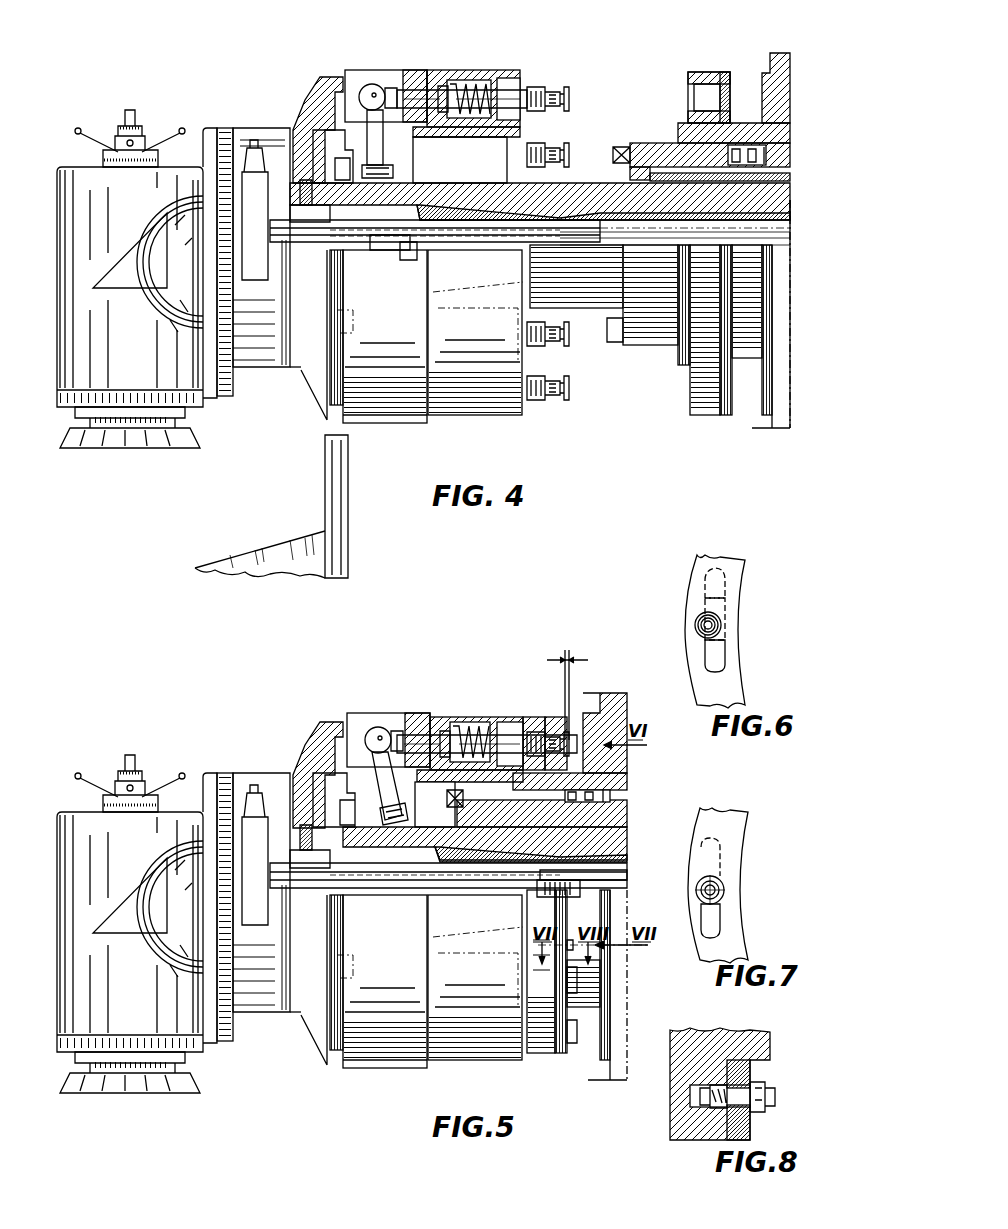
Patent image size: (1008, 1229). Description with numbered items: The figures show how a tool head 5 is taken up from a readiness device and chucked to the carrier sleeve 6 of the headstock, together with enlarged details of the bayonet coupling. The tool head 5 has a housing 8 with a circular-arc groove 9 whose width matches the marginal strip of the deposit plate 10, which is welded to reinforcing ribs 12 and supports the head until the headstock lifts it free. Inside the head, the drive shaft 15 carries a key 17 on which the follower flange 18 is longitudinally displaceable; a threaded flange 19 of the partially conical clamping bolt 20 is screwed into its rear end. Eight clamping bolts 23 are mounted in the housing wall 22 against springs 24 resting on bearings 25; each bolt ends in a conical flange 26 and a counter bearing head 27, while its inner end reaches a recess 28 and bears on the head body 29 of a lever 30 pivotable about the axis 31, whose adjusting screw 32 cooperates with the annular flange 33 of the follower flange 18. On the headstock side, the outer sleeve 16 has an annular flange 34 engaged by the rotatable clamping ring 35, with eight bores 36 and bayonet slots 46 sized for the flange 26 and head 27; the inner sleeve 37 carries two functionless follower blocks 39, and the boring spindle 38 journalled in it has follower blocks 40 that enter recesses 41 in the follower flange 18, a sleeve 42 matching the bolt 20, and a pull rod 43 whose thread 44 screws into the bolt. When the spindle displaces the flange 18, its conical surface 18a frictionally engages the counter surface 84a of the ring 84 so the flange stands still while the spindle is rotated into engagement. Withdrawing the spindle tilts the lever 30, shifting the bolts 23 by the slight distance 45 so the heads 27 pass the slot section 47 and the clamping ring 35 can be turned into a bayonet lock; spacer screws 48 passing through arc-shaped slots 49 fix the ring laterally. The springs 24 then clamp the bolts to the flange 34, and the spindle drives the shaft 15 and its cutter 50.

In FIG. 4, the tool head 5 is at (218, 108).
In FIG. 5, the tool head 5 is at (222, 762).
In FIG. 4, the carrier sleeve 6 is at (662, 124).
In FIG. 4, the housing 8 is at (440, 52).
In FIG. 5, the housing 8 is at (432, 704).
In FIG. 4, the groove 9 is at (340, 72).
In FIG. 5, the groove 9 is at (338, 717).
In FIG. 4, the deposit plate 10 is at (332, 490).
In FIG. 4, the reinforcing ribs 12 is at (296, 553).
In FIG. 4, the drive shaft 15 is at (350, 228).
In FIG. 5, the drive shaft 15 is at (380, 876).
In FIG. 4, the outer sleeve 16 is at (758, 190).
In FIG. 5, the outer sleeve 16 is at (627, 778).
In FIG. 4, the key 17 is at (375, 245).
In FIG. 4, the follower flange 18 is at (372, 208).
In FIG. 5, the follower flange 18 is at (400, 851).
In FIG. 4, the conical surface 18a is at (320, 210).
In FIG. 5, the conical surface 18a is at (345, 868).
In FIG. 4, the threaded flange 19 is at (410, 262).
In FIG. 4, the clamping bolt 20 is at (488, 235).
In FIG. 4, the housing wall 22 is at (505, 72).
In FIG. 5, the housing wall 22 is at (469, 772).
In FIG. 4, the clamping bolts 23 is at (520, 80).
In FIG. 5, the clamping bolts 23 is at (512, 722).
In FIG. 4, the springs 24 is at (475, 88).
In FIG. 5, the springs 24 is at (480, 730).
In FIG. 4, the bearings 25 is at (445, 84).
In FIG. 5, the bearings 25 is at (447, 728).
In FIG. 4, the conical flange 26 is at (540, 90).
In FIG. 4, the counter bearing head 27 is at (570, 92).
In FIG. 5, the counter bearing head 27 is at (570, 737).
In FIG. 6, the counter bearing head 27 is at (715, 630).
In FIG. 4, the recess 28 is at (395, 72).
In FIG. 5, the recess 28 is at (398, 717).
In FIG. 4, the head body 29 is at (378, 85).
In FIG. 5, the head body 29 is at (368, 730).
In FIG. 4, the lever 30 is at (368, 148).
In FIG. 5, the lever 30 is at (382, 770).
In FIG. 4, the axis 31 is at (370, 92).
In FIG. 5, the axis 31 is at (378, 735).
In FIG. 4, the adjusting screw 32 is at (388, 165).
In FIG. 5, the adjusting screw 32 is at (403, 825).
In FIG. 4, the annular flange 33 is at (340, 170).
In FIG. 5, the annular flange 33 is at (355, 808).
In FIG. 4, the annular flange 34 is at (702, 72).
In FIG. 5, the annular flange 34 is at (530, 717).
In FIG. 8, the annular flange 34 is at (700, 1045).
In FIG. 4, the clamping ring 35 is at (735, 72).
In FIG. 5, the clamping ring 35 is at (550, 715).
In FIG. 6, the clamping ring 35 is at (725, 555).
In FIG. 7, the clamping ring 35 is at (732, 915).
In FIG. 8, the clamping ring 35 is at (740, 1122).
In FIG. 4, the bores 36 is at (695, 96).
In FIG. 6, the bores 36 is at (720, 625).
In FIG. 4, the inner sleeve 37 is at (730, 200).
In FIG. 5, the inner sleeve 37 is at (627, 815).
In FIG. 4, the boring spindle 38 is at (702, 200).
In FIG. 5, the boring spindle 38 is at (627, 850).
In FIG. 4, the follower blocks 39 is at (612, 160).
In FIG. 5, the follower blocks 39 is at (446, 796).
In FIG. 4, the follower blocks 40 is at (466, 149).
In FIG. 5, the follower blocks 40 is at (448, 800).
In FIG. 4, the recesses 41 is at (460, 160).
In FIG. 4, the sleeve 42 is at (452, 225).
In FIG. 5, the sleeve 42 is at (490, 870).
In FIG. 4, the pull rod 43 is at (668, 200).
In FIG. 5, the pull rod 43 is at (627, 878).
In FIG. 4, the thread 44 is at (560, 245).
In FIG. 5, the distance 45 is at (567, 686).
In FIG. 4, the recesses 46 is at (731, 98).
In FIG. 6, the recesses 46 is at (718, 605).
In FIG. 6, the slot section 47 is at (720, 582).
In FIG. 8, the spacer screws 48 is at (738, 1085).
In FIG. 7, the arc-shaped slots 49 is at (718, 848).
In FIG. 4, the cutter 50 is at (138, 448).
In FIG. 5, the cutter 50 is at (138, 1093).
In FIG. 4, the ring 84 is at (292, 210).
In FIG. 5, the ring 84 is at (322, 850).
In FIG. 4, the counter surface 84a is at (308, 182).
In FIG. 5, the counter surface 84a is at (322, 860).